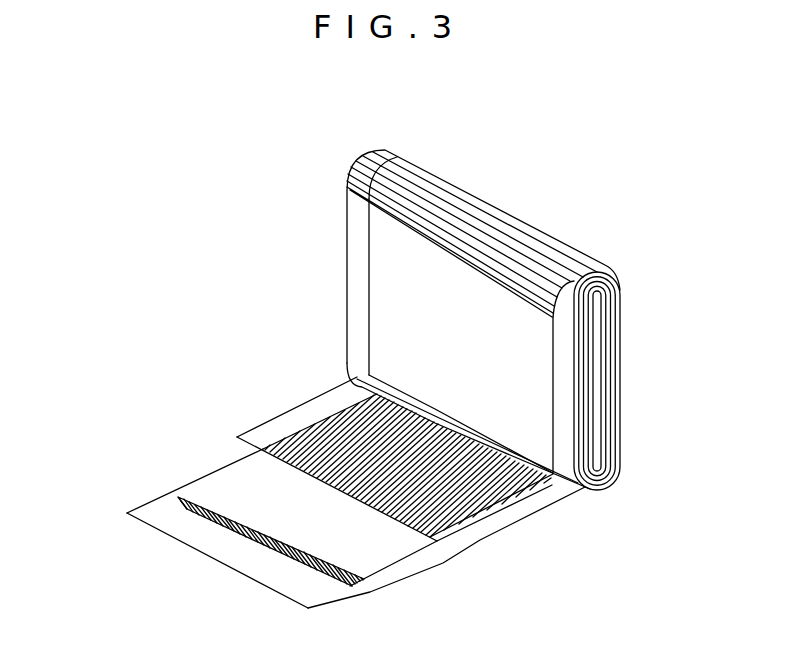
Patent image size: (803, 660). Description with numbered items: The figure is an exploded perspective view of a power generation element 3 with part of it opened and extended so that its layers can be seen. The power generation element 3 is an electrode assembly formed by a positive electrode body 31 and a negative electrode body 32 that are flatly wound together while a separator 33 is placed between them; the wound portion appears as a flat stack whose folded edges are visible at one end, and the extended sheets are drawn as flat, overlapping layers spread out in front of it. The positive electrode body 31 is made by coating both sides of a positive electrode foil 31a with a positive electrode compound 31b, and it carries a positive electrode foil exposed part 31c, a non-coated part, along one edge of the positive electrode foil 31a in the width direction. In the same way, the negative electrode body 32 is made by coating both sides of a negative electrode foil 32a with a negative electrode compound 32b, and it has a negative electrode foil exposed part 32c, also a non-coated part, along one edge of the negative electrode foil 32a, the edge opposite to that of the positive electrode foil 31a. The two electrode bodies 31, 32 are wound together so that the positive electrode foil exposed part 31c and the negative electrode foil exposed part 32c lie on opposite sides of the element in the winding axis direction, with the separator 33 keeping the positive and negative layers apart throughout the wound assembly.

The power generation element 3 is at (470, 228).
The positive electrode body 31 is at (264, 540).
The positive electrode foil 31a is at (385, 578).
The positive electrode compound 31b is at (180, 491).
The positive electrode foil exposed part 31c is at (563, 378).
The negative electrode body 32 is at (527, 483).
The negative electrode foil 32a is at (302, 410).
The negative electrode compound 32b is at (463, 513).
The negative electrode foil exposed part 32c is at (353, 265).
The separator 33 is at (222, 458).